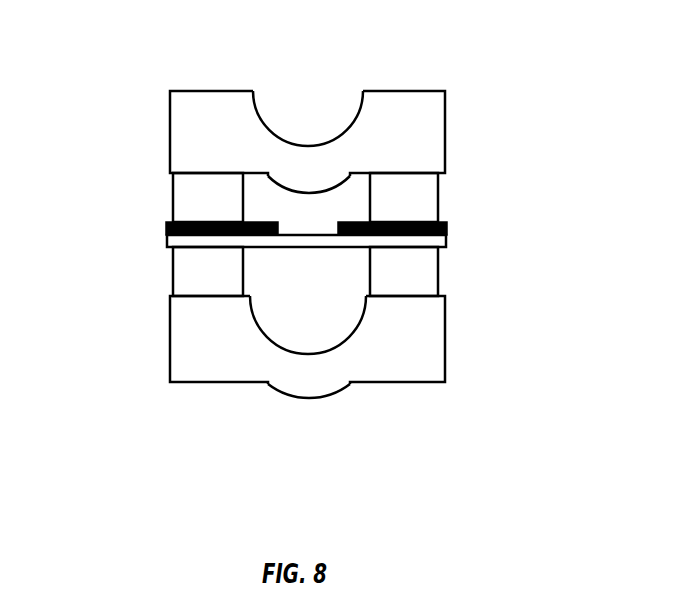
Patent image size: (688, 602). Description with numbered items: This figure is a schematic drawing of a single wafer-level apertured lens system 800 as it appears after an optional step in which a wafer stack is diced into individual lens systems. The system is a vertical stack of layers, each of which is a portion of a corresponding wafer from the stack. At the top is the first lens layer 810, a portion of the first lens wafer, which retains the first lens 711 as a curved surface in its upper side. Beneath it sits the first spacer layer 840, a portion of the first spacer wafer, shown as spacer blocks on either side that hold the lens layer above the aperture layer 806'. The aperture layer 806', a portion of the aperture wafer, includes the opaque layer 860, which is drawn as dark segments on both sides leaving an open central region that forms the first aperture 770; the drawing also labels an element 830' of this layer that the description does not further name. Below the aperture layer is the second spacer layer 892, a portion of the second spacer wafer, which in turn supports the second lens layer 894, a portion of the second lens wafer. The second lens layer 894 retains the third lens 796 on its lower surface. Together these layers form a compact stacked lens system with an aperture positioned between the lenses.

The wafer-level apertured lens system 800 is at (142, 75).
The first lens 711 is at (308, 120).
The first aperture 770 is at (309, 217).
The first lens layer 810 is at (422, 90).
The first spacer layer 840 is at (224, 210).
The opaque layer 860 is at (167, 229).
The substrate plate 830' is at (265, 240).
The aperture layer 806' is at (325, 245).
The second spacer layer 892 is at (225, 283).
The second lens layer 894 is at (422, 383).
The third lens 796 is at (300, 413).